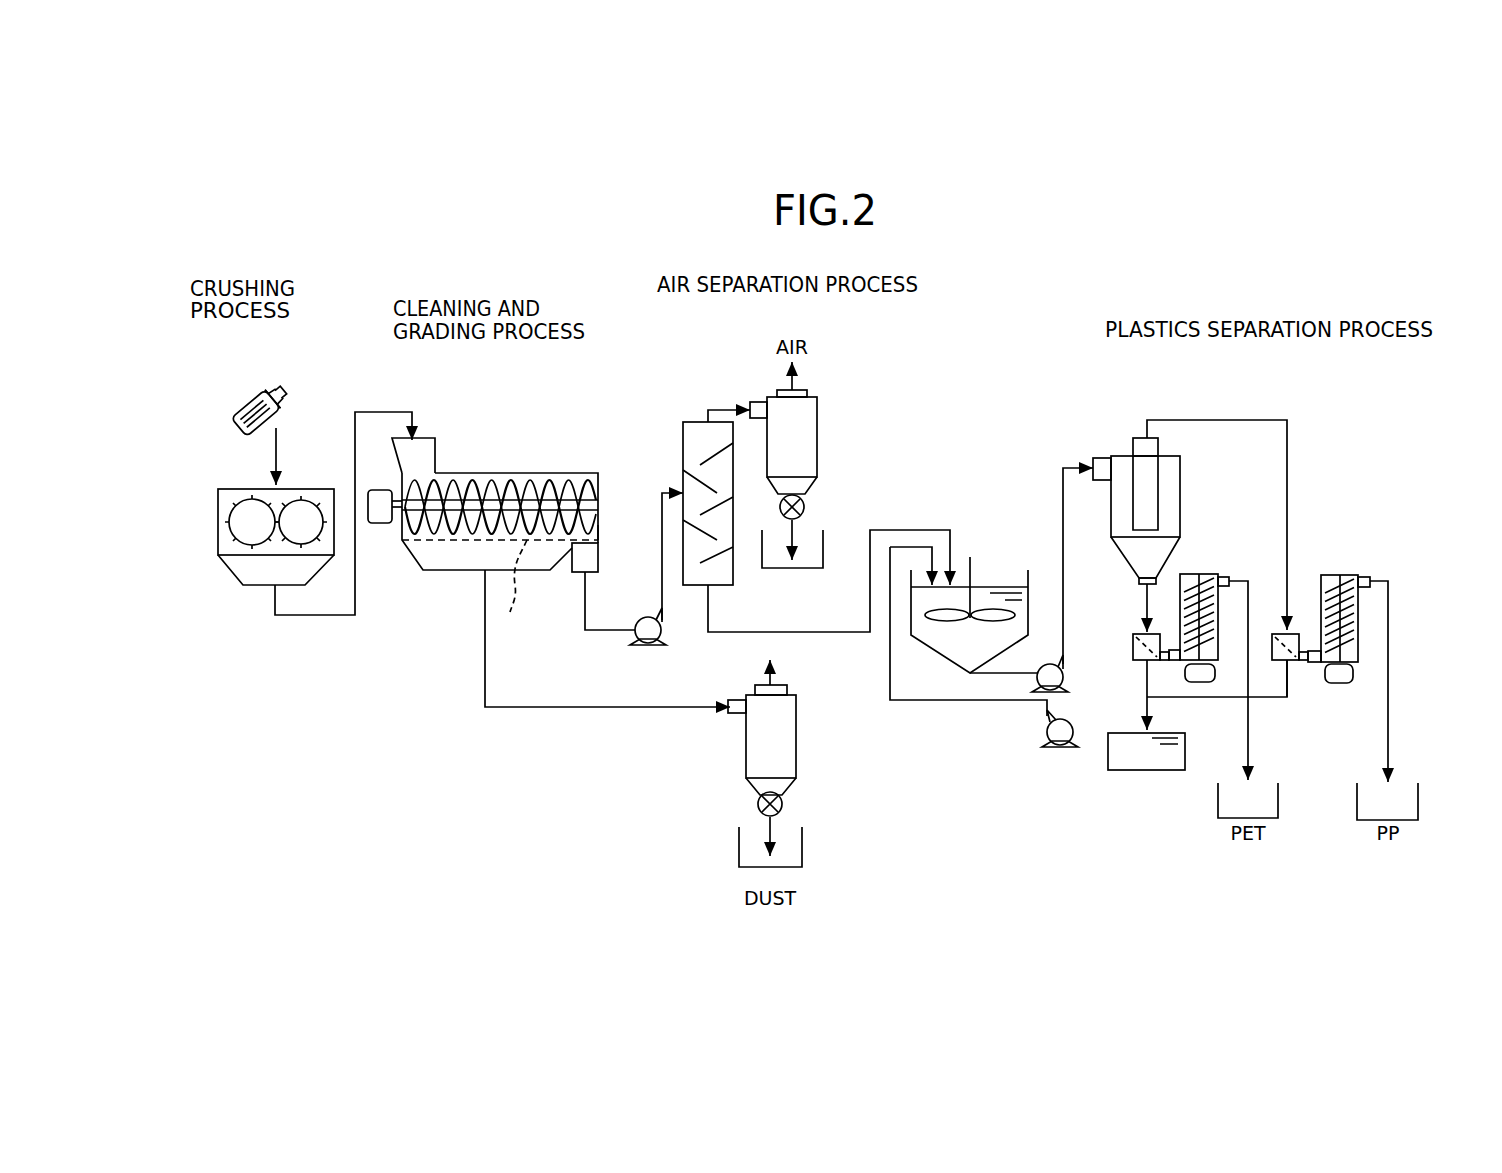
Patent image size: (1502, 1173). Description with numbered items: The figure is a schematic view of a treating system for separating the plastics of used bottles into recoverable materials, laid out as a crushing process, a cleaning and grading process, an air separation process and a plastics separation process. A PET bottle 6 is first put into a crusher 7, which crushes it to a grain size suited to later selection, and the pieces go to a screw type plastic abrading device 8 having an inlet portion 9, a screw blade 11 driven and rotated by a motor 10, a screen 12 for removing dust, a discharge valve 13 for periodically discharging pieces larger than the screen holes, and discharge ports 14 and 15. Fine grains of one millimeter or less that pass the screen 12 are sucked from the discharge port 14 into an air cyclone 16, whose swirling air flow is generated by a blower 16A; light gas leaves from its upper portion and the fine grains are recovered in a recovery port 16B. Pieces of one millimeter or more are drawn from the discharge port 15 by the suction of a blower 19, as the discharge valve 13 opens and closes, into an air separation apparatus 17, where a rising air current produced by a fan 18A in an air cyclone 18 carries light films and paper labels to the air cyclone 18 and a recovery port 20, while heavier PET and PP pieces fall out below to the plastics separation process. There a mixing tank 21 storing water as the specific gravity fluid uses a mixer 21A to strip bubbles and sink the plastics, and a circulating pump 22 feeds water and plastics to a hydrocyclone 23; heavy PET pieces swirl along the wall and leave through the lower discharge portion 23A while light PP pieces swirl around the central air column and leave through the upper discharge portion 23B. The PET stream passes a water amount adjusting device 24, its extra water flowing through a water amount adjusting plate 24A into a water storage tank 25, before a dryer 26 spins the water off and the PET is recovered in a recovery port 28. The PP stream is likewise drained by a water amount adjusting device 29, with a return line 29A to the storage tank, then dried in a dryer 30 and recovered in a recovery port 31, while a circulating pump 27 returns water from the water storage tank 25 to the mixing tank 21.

The PET bottle 6 is at (250, 395).
The crusher 7 is at (218, 518).
The screw type plastic abrading device 8 is at (540, 475).
The inlet portion 9 is at (425, 440).
The motor 10 is at (372, 525).
The screw blade 11 is at (470, 495).
The screen 12 is at (516, 591).
The discharge valve 13 is at (598, 532).
The discharge port 14 is at (462, 572).
The discharge port 15 is at (575, 575).
The air cyclone 16 is at (746, 760).
The blower 16A is at (787, 690).
The recovery port 16B is at (739, 838).
The air separation apparatus 17 is at (683, 452).
The air cyclone 18 is at (817, 462).
The fan 18A is at (817, 393).
The blower 19 is at (648, 617).
The recovery port 20 is at (772, 570).
The mixing tank 21 is at (911, 642).
The mixer 21A is at (975, 570).
The circulating pump 22 is at (1063, 672).
The hydrocyclone 23 is at (1180, 490).
The lower discharge portion 23A is at (1139, 580).
The upper discharge portion 23B is at (1133, 440).
The water amount adjusting device 24 is at (1140, 636).
The water amount adjusting plate 24A is at (1145, 662).
The water storage tank 25 is at (1160, 772).
The dryer 26 is at (1205, 575).
The circulating pump 27 is at (1047, 725).
The recovery port 28 is at (1278, 795).
The water amount adjusting device 29 is at (1282, 633).
The return pipe 29A is at (1290, 663).
The dryer 30 is at (1340, 575).
The recovery port 31 is at (1418, 795).